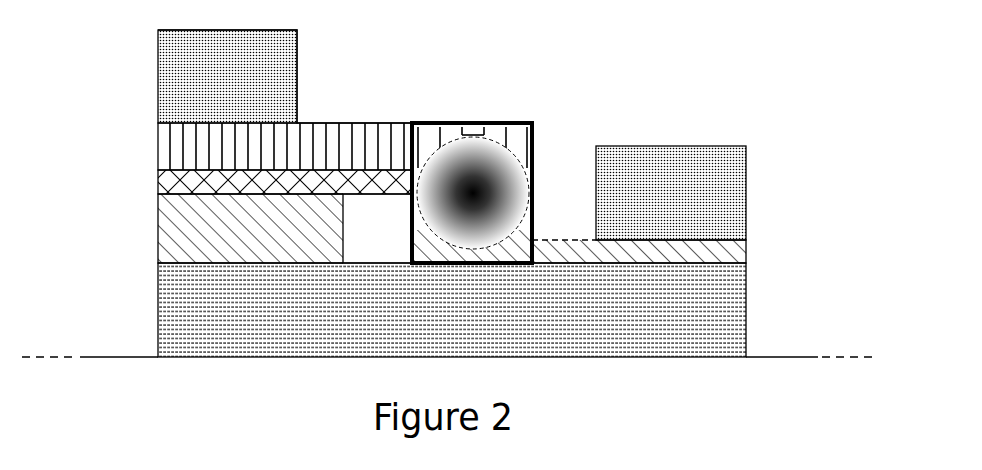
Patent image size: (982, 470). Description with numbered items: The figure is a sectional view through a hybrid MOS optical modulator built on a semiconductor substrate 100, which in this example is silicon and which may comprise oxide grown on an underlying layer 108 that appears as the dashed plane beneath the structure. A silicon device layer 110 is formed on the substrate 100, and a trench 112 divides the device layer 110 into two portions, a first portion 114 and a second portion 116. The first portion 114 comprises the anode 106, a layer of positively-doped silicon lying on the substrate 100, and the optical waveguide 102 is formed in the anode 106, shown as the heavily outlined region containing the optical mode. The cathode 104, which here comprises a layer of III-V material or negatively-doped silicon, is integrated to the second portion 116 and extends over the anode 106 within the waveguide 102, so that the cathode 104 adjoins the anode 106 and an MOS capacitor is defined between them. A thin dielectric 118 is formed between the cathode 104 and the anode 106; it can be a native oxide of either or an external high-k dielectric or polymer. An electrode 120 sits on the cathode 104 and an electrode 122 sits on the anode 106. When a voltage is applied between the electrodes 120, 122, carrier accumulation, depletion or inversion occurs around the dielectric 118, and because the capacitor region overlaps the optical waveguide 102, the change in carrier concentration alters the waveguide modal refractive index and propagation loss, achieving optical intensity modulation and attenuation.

The semiconductor substrate 100 is at (746, 303).
The optical waveguide 102 is at (507, 122).
The cathode 104 is at (157, 143).
The anode 106 is at (747, 246).
The underlying layer 108 is at (81, 357).
The silicon device layer 110 is at (157, 229).
The trench 112 is at (385, 216).
The first portion 114 is at (570, 230).
The second portion 116 is at (260, 228).
The thin dielectric 118 is at (157, 181).
The electrode 120 is at (157, 69).
The electrode 122 is at (747, 177).